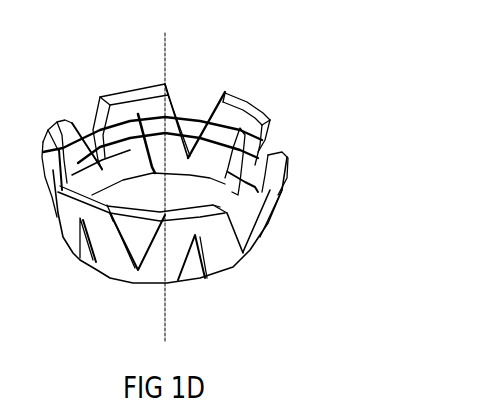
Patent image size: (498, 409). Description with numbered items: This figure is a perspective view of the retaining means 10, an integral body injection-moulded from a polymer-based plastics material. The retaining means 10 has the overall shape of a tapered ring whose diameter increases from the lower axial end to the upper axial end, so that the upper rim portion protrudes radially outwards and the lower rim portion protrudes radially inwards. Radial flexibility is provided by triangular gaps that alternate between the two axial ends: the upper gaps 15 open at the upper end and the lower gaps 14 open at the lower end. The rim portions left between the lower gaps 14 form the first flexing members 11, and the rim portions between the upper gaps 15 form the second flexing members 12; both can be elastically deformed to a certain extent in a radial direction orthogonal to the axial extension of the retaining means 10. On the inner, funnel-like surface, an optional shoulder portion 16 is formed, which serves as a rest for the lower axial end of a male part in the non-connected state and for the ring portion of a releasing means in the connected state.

The retaining means 10 is at (269, 88).
The first flexing members 11 is at (143, 278).
The second flexing members 12 is at (115, 92).
The lower gaps 14 is at (92, 258).
The upper gaps 15 is at (197, 107).
The shoulder portion 16 is at (258, 149).